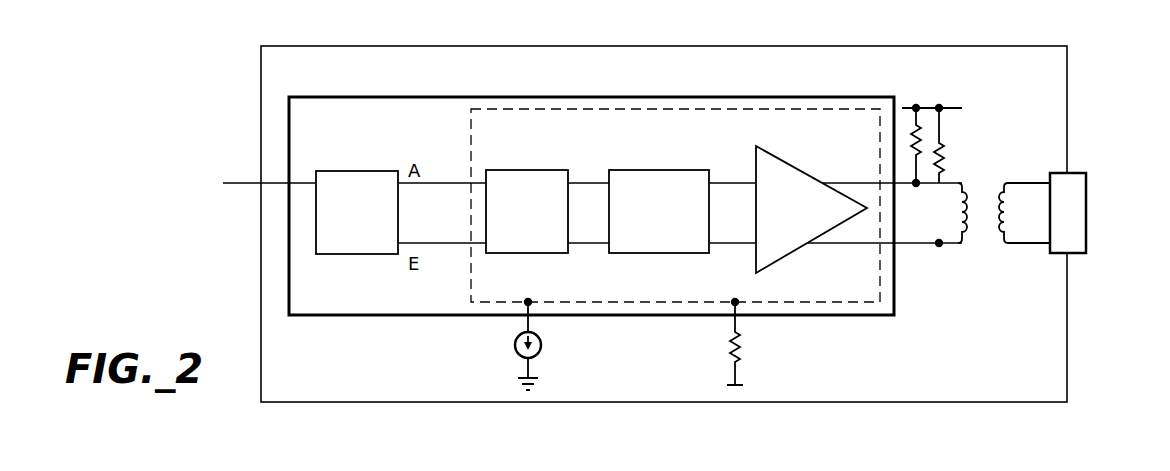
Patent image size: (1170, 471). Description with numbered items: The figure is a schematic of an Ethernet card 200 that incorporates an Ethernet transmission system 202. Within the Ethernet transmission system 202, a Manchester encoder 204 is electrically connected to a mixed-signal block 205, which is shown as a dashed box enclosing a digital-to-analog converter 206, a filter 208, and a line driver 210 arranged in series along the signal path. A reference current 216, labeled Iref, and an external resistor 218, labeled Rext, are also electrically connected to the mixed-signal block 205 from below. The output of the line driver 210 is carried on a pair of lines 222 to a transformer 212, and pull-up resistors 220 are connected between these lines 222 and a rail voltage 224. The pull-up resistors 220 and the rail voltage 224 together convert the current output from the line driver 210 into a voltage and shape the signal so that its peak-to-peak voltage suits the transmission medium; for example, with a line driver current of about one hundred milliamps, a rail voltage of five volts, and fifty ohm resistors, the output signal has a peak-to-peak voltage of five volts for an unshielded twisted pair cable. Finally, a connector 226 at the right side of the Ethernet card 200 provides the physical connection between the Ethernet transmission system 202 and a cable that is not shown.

The Ethernet card 200 is at (1068, 91).
The Ethernet transmission system 202 is at (930, 296).
The Manchester encoder 204 is at (333, 171).
The mixed-signal block 205 is at (603, 109).
The digital-to-analog converter 206 is at (503, 170).
The filter 208 is at (625, 170).
The line driver 210 is at (800, 171).
The transformer 212 is at (984, 184).
The reference current 216 is at (513, 347).
The external resistor 218 is at (716, 357).
The pull-up resistors 220 is at (921, 122).
The lines 222 is at (903, 186).
The rail voltage 224 is at (955, 108).
The connector 226 is at (1080, 213).